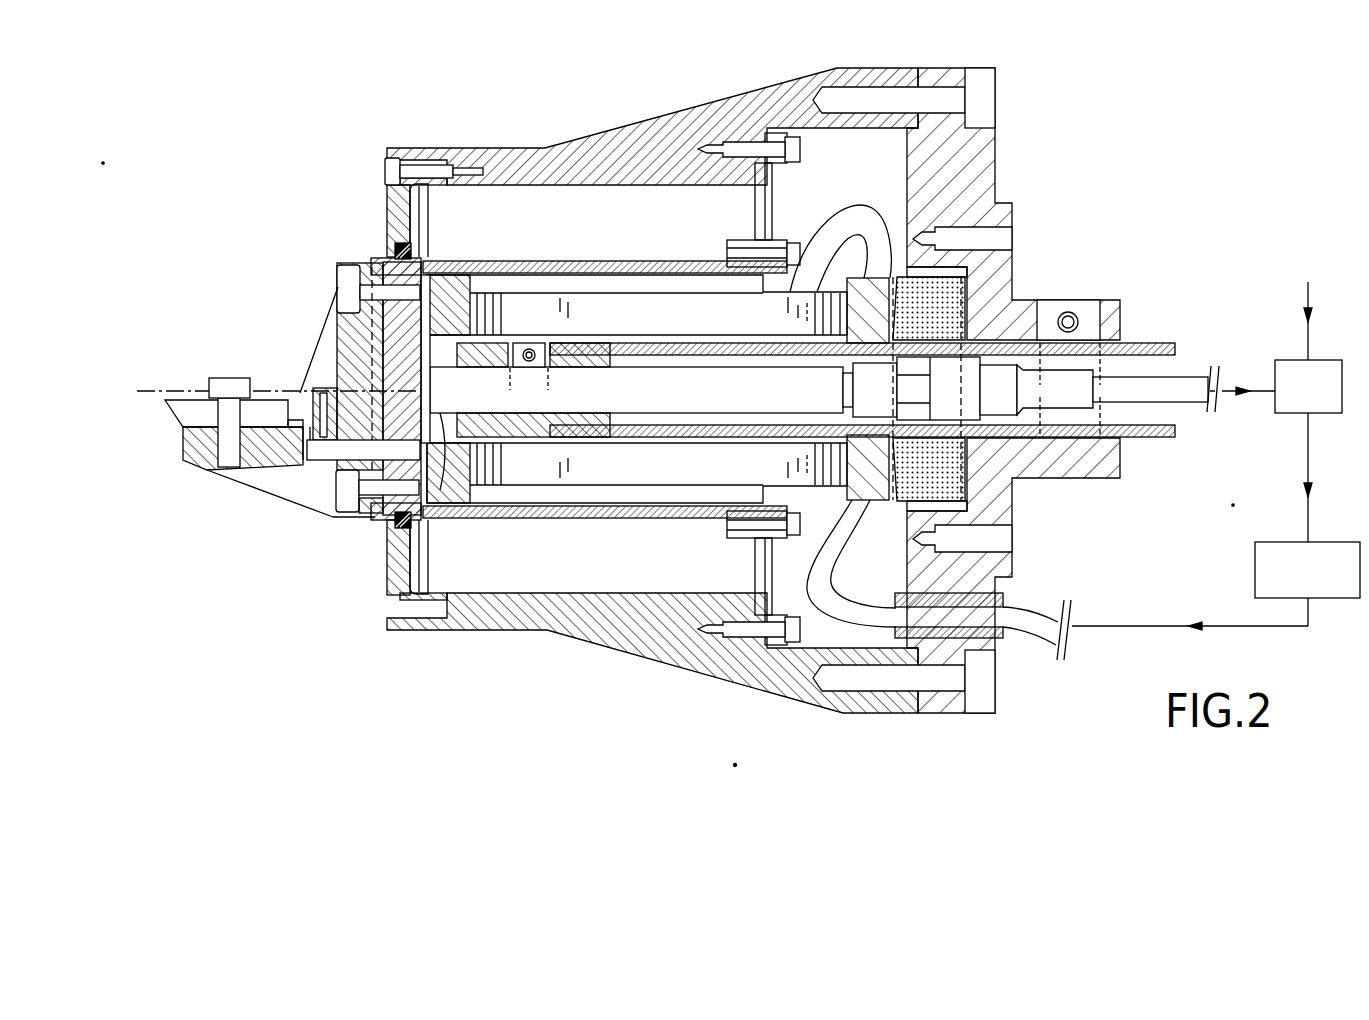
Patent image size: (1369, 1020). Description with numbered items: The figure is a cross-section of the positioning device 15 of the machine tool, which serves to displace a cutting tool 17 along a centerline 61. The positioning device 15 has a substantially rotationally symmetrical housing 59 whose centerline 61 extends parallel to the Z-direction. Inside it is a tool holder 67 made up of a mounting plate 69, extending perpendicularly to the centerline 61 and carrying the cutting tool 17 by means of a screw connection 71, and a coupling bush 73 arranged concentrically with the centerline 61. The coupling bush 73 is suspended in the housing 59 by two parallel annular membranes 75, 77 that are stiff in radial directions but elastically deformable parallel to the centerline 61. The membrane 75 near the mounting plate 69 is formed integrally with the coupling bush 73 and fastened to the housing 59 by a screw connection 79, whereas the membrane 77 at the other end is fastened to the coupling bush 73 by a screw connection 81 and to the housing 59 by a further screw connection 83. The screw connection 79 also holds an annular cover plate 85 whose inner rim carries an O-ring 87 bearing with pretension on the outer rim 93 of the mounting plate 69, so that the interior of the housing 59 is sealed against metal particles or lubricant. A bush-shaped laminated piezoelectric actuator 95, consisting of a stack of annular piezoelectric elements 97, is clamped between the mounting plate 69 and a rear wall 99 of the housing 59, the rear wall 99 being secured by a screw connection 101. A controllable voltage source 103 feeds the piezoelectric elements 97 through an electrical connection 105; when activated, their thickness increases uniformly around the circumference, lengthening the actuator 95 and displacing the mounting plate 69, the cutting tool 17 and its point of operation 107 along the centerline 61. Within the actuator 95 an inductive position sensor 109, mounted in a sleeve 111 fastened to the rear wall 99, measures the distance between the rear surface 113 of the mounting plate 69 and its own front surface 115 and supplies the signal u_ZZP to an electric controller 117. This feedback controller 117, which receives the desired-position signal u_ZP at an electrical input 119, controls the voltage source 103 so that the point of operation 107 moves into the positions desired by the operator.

The positioning device 15 is at (360, 670).
The cutting tool 17 is at (188, 412).
The housing 59 is at (655, 132).
The centerline 61 is at (276, 386).
The tool holder 67 is at (418, 262).
The mounting plate 69 is at (395, 318).
The screw connection 71 is at (345, 490).
The coupling bush 73 is at (578, 262).
The membrane 75 is at (425, 204).
The membrane 77 is at (773, 196).
The screw connection 79 is at (385, 165).
The screw connection 81 is at (795, 248).
The screw connection 83 is at (805, 155).
The annular cover plate 85 is at (390, 578).
The O-ring 87 is at (394, 250).
The outer rim 93 is at (377, 525).
The laminated piezoelectric actuator 95 is at (590, 487).
The piezoelectric elements 97 is at (505, 317).
The rear wall 99 is at (980, 165).
The screw connection 101 is at (990, 104).
The controllable voltage source 103 is at (1255, 565).
The electrical connection 105 is at (830, 556).
The point of operation 107 is at (157, 390).
The inductive position sensor 109 is at (505, 440).
The sleeve 111 is at (1158, 436).
The rear surface 113 is at (444, 514).
The front surface 115 is at (436, 384).
The electric controller 117 is at (1331, 415).
The electrical input 119 is at (1310, 360).